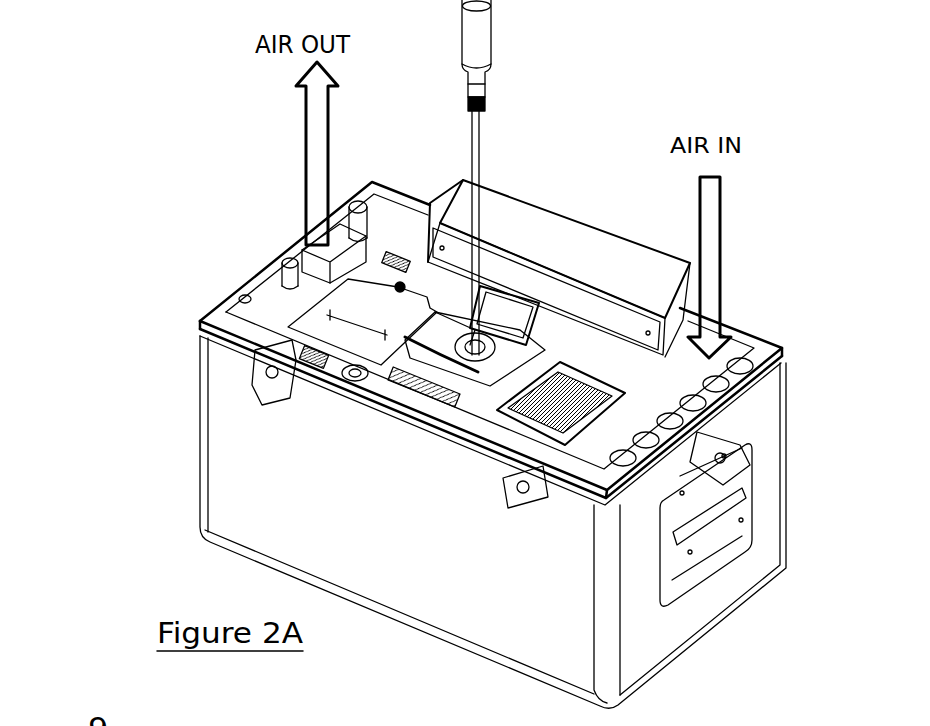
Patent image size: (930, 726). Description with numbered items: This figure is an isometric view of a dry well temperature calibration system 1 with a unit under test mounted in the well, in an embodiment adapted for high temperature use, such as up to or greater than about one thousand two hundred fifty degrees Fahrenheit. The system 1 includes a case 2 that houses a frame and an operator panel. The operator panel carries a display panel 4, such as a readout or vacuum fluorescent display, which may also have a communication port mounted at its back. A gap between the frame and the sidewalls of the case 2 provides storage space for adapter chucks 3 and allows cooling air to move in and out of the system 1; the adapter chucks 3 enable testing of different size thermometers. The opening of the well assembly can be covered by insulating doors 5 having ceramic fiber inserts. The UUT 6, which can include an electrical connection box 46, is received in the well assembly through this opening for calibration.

The dry well temperature calibration system 1 is at (455, 413).
The case 2 is at (223, 470).
The adapter chucks 3 is at (240, 292).
The display panel 4 is at (618, 262).
The insulating doors 5 is at (500, 307).
The UUT 6 is at (478, 140).
The electrical connection box 46 is at (482, 50).